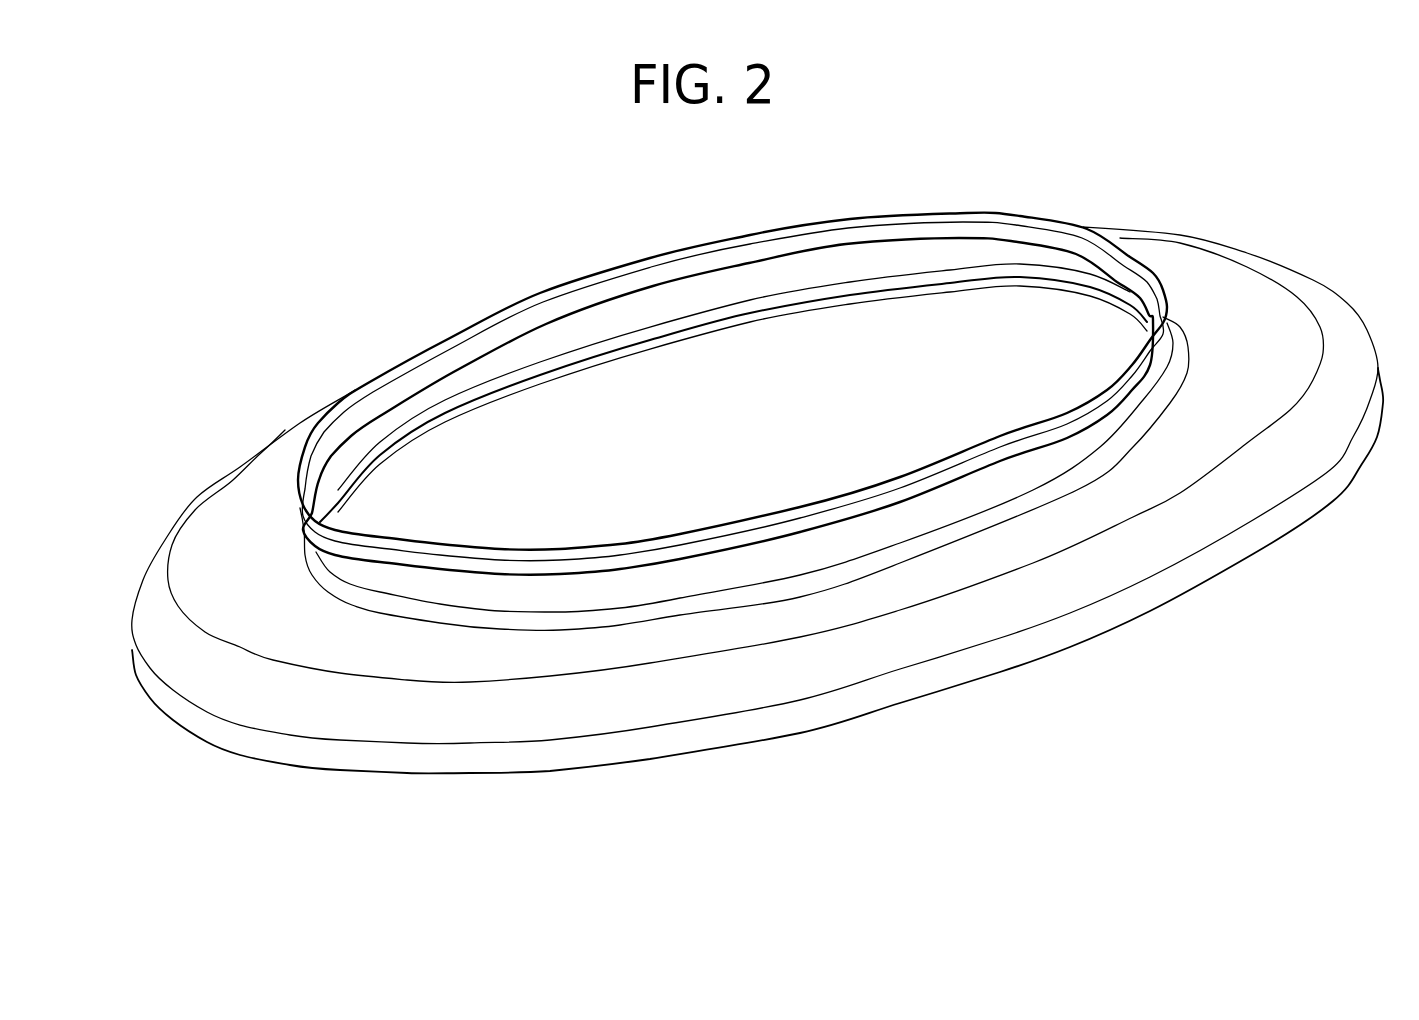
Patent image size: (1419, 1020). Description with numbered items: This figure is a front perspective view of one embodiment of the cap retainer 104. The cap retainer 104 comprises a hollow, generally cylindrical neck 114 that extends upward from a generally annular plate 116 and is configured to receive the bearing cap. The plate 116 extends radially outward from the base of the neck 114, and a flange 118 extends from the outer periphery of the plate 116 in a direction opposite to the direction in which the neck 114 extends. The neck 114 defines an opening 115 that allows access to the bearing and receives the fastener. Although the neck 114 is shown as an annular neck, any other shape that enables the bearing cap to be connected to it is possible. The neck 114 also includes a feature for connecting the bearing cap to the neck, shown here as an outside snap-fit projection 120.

The cap retainer 104 is at (1090, 207).
The neck 114 is at (740, 590).
The opening 115 is at (723, 483).
The plate 116 is at (1262, 343).
The flange 118 is at (1253, 517).
The outside snap-fit projection 120 is at (358, 540).